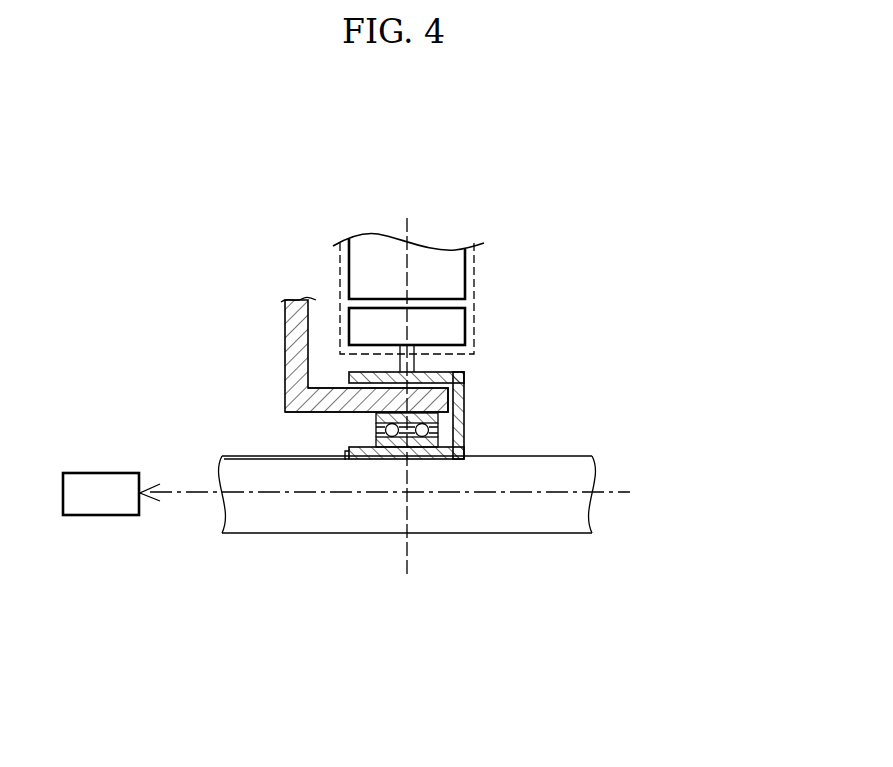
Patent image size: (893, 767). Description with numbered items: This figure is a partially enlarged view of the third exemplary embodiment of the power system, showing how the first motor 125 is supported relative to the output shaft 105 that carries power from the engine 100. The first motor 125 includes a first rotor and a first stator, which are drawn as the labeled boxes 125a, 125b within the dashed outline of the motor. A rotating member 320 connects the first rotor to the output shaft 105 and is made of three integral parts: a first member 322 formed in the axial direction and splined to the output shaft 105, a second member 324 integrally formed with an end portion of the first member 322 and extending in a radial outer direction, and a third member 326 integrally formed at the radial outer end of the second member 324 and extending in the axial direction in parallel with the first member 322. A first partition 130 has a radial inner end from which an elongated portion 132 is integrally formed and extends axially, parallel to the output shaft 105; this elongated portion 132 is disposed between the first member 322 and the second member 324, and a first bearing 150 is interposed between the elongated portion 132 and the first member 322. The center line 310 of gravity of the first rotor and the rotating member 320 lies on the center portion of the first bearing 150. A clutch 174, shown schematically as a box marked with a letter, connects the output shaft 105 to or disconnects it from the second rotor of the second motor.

The engine 100 is at (641, 492).
The output shaft 105 is at (494, 518).
The first motor 125 is at (476, 280).
The rotor R1 of sensor 125a is at (347, 325).
The stator S1 of sensor 125b is at (347, 268).
The first partition 130 is at (290, 345).
The elongated portion 132 is at (312, 412).
The first bearing 150 is at (364, 430).
The clutch 174 is at (102, 516).
The center line of gravity 310 is at (407, 570).
The rotating member 320 is at (472, 395).
The first member 322 is at (430, 458).
The second member 324 is at (466, 402).
The third member 326 is at (437, 373).